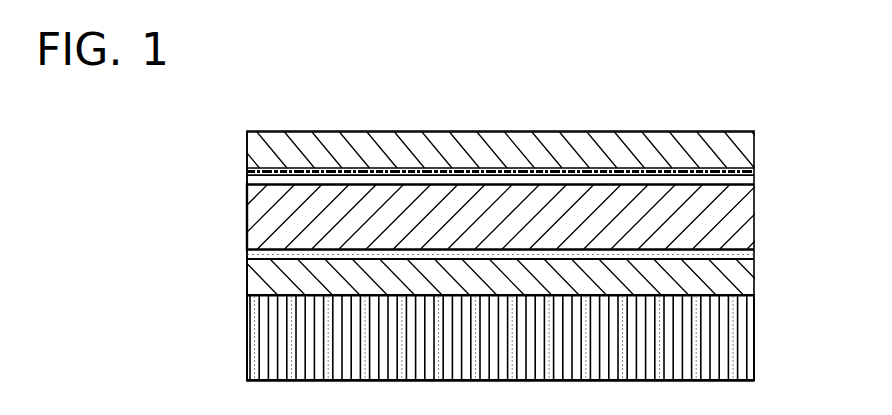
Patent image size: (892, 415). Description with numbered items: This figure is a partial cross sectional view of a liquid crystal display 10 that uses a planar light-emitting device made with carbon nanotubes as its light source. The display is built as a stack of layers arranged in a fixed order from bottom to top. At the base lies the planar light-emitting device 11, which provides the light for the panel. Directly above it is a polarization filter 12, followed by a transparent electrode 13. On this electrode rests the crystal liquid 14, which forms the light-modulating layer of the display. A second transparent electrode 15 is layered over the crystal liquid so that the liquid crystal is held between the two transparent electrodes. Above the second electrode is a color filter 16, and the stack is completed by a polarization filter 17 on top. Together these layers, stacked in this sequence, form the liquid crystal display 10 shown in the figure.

The liquid crystal display 10 is at (312, 113).
The planar light-emitting device 11 is at (252, 334).
The polarization filter 12 is at (252, 282).
The transparent electrode 13 is at (250, 257).
The crystal liquid 14 is at (250, 213).
The transparent electrode 15 is at (248, 180).
The color filter 16 is at (253, 171).
The polarization filter 17 is at (257, 158).